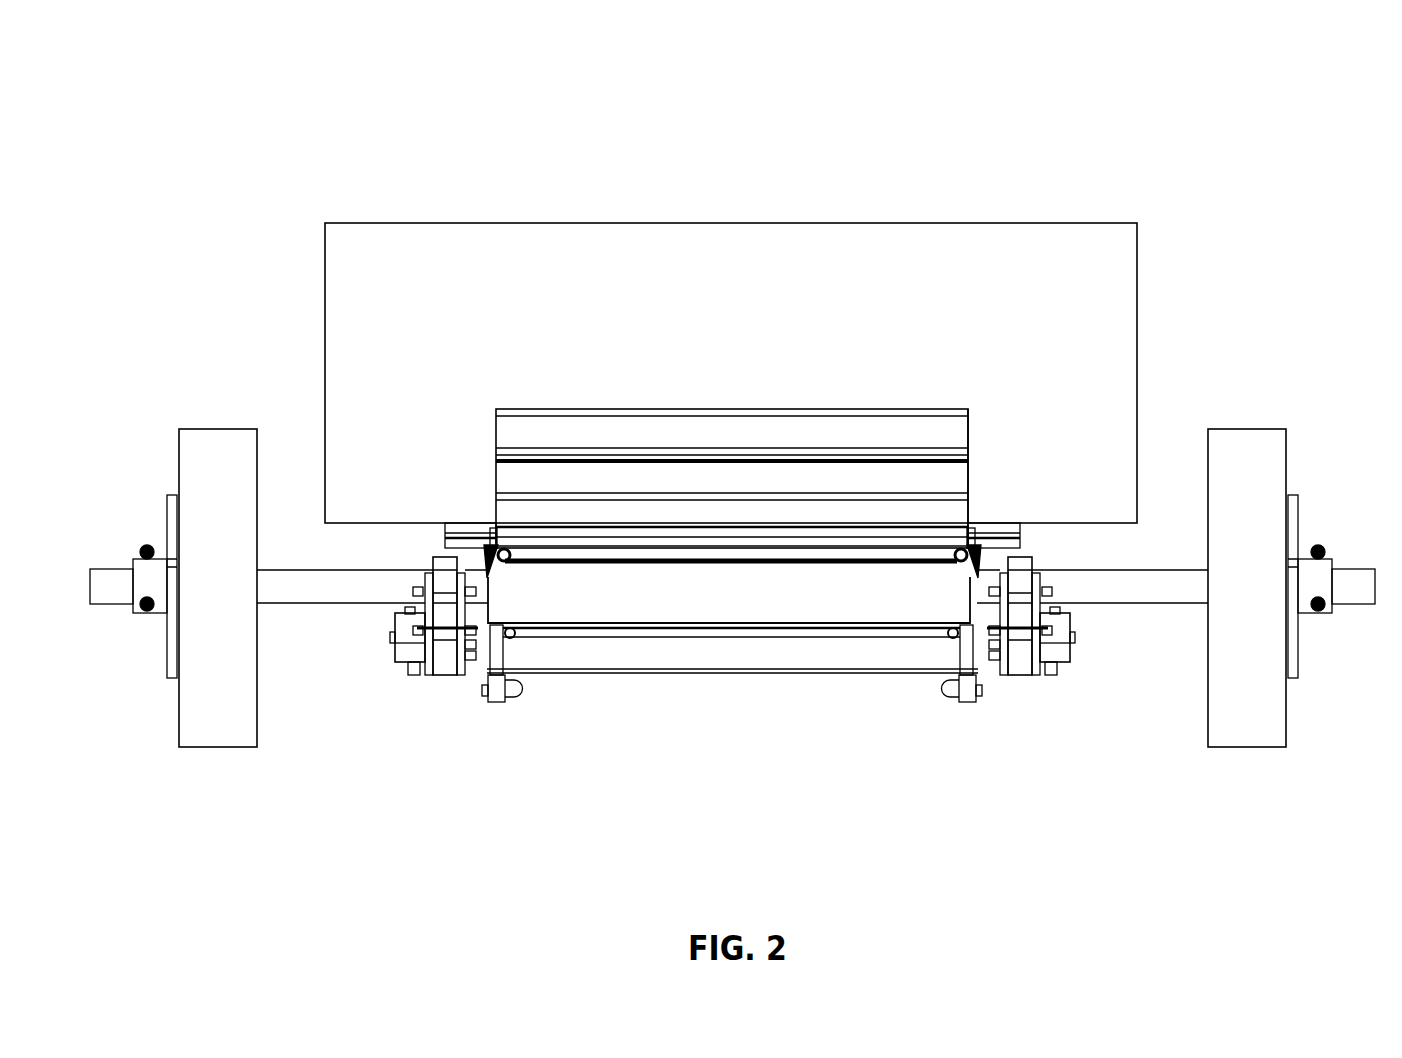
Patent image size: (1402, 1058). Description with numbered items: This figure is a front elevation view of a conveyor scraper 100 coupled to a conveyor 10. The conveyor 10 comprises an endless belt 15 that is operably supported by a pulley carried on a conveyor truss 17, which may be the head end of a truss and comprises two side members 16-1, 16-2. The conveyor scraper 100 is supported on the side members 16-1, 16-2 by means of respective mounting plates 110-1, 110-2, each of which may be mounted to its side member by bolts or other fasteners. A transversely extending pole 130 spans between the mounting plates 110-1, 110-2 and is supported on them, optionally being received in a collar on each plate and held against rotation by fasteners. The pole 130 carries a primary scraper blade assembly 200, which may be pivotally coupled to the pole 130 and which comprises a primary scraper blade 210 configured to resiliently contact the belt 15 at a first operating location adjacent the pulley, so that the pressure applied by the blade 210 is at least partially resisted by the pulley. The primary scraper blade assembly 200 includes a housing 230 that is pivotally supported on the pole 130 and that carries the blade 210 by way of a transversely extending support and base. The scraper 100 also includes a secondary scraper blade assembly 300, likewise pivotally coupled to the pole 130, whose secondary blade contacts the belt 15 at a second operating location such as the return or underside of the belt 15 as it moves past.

The conveyor 10 is at (138, 145).
The conveyor scraper 100 is at (312, 178).
The endless belt 15 is at (762, 223).
The conveyor truss 17 is at (135, 340).
The side member 16-1 is at (1248, 430).
The side member 16-2 is at (218, 428).
The mounting plate 110-1 is at (1297, 645).
The mounting plate 110-2 is at (167, 648).
The pole 130 is at (355, 568).
The primary scraper blade assembly 200 is at (465, 450).
The primary scraper blade 210 is at (968, 440).
The housing 230 is at (708, 600).
The secondary scraper blade assembly 300 is at (486, 752).